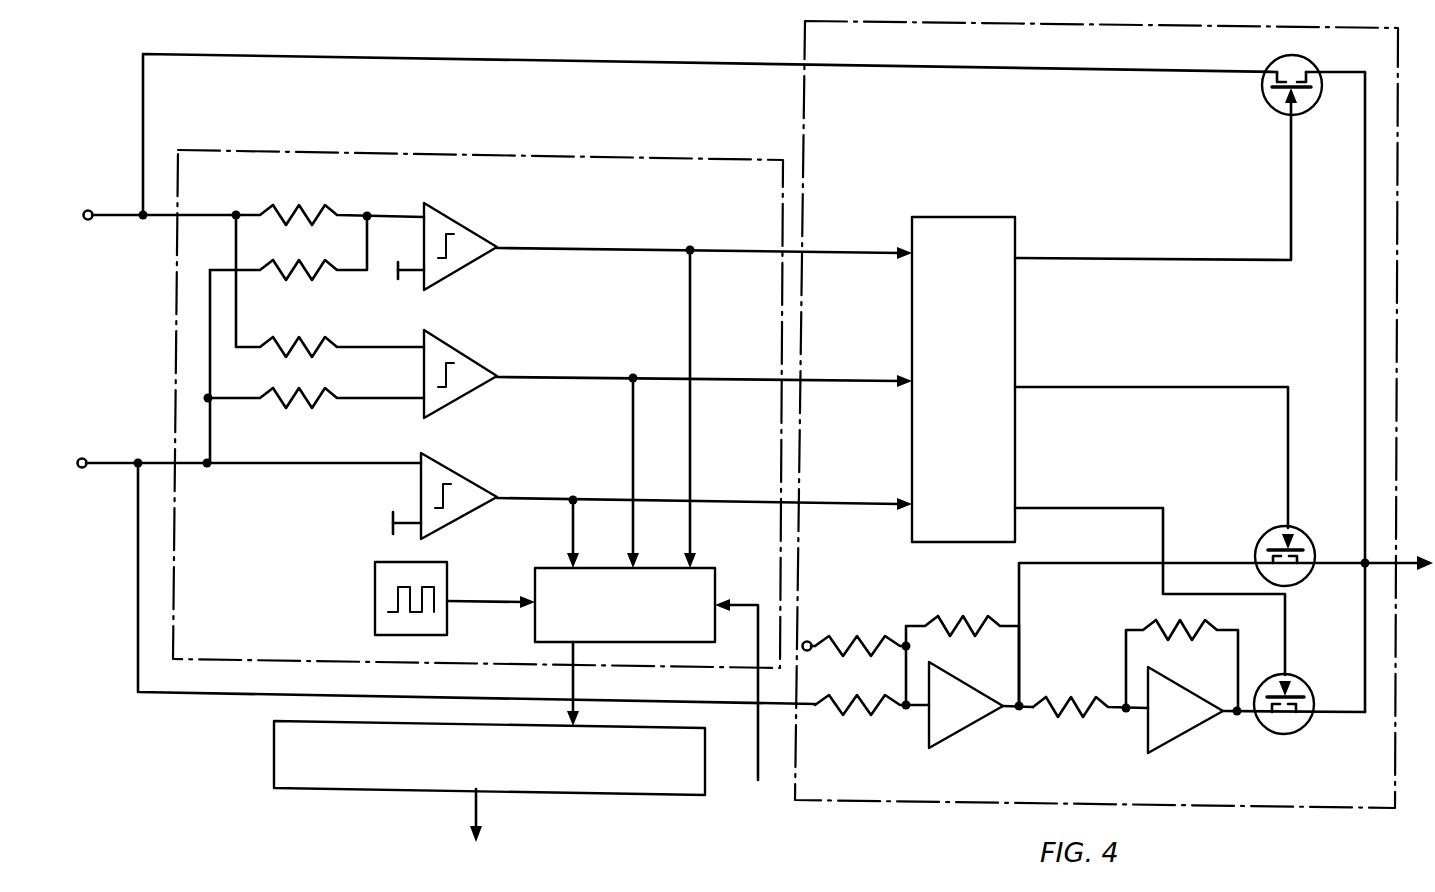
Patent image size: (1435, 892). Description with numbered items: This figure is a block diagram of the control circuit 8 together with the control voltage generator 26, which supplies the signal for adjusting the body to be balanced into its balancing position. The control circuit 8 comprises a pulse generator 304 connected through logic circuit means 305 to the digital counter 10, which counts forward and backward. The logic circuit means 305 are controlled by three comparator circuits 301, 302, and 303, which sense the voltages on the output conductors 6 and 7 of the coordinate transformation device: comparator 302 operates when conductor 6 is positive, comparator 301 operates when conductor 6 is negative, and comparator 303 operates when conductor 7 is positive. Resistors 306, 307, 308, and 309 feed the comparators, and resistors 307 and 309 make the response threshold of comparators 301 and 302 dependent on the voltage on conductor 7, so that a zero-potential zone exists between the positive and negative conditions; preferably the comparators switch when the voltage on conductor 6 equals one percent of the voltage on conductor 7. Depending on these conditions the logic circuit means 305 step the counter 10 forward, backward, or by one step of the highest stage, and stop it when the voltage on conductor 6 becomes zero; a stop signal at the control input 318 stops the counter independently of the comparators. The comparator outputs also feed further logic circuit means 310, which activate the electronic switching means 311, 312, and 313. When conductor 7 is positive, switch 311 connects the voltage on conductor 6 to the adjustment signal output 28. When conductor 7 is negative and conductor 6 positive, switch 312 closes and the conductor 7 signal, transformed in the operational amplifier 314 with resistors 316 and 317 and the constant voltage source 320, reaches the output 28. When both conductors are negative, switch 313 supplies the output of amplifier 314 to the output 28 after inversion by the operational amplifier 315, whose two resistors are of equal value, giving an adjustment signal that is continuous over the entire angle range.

The output conductor 6 is at (117, 205).
The output conductor 7 is at (112, 458).
The control circuit 8 is at (699, 211).
The digital counter 10 is at (705, 758).
The control voltage generator 26 is at (1088, 56).
The adjustment signal output 28 is at (1403, 562).
The comparator circuit 301 is at (463, 222).
The comparator circuit 302 is at (463, 350).
The comparator circuit 303 is at (459, 478).
The pulse generator 304 is at (375, 592).
The logic circuit means 305 is at (700, 568).
The resistor 306 is at (285, 212).
The resistor 307 is at (285, 267).
The resistor 308 is at (285, 344).
The resistor 309 is at (285, 395).
The logic circuit means 310 is at (950, 217).
The electronic switching means 311 is at (1312, 60).
The electronic switching means 312 is at (1305, 531).
The electronic switching means 313 is at (1304, 680).
The operational amplifier 314 is at (958, 778).
The operational amplifier 315 is at (1205, 780).
The resistor 316 is at (851, 640).
The resistor 317 is at (850, 713).
The control input 318 is at (758, 780).
The constant voltage source 320 is at (811, 651).